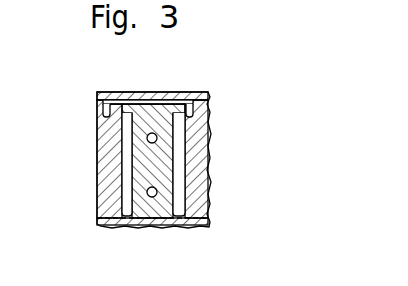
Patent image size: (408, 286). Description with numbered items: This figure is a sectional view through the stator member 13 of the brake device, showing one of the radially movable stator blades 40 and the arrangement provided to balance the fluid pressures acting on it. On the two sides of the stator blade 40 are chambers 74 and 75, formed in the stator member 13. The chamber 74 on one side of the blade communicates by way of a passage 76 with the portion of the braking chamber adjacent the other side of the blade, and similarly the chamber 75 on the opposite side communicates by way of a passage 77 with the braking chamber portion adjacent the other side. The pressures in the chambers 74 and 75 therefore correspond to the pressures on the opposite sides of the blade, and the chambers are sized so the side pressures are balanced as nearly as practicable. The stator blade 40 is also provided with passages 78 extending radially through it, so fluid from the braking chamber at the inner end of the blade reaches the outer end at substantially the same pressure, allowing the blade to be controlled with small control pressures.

The stator member 13 is at (213, 209).
The stator blade 40 is at (152, 225).
The chamber 74 is at (100, 158).
The chamber 75 is at (207, 198).
The passage 76 is at (209, 95).
The passage 77 is at (162, 93).
The passages 78 is at (156, 189).